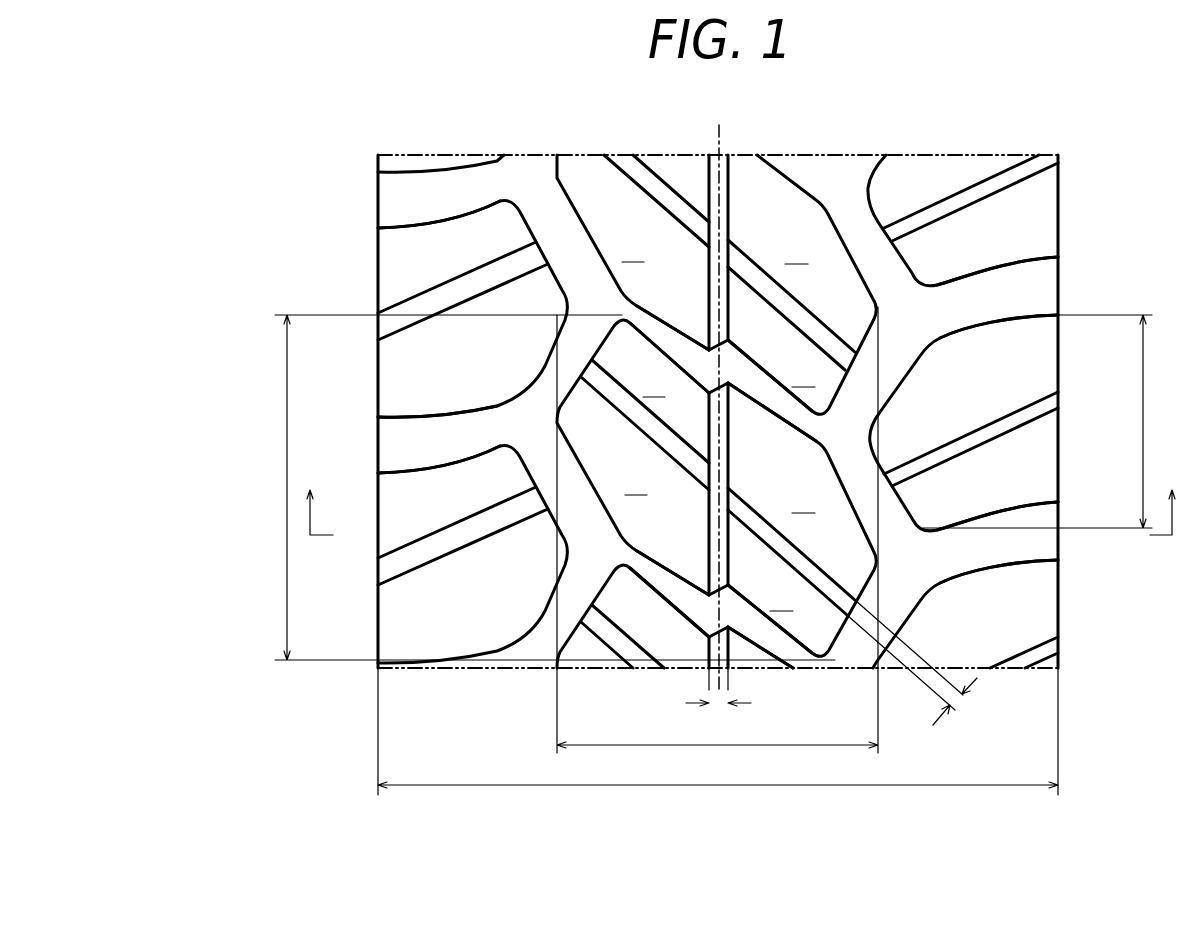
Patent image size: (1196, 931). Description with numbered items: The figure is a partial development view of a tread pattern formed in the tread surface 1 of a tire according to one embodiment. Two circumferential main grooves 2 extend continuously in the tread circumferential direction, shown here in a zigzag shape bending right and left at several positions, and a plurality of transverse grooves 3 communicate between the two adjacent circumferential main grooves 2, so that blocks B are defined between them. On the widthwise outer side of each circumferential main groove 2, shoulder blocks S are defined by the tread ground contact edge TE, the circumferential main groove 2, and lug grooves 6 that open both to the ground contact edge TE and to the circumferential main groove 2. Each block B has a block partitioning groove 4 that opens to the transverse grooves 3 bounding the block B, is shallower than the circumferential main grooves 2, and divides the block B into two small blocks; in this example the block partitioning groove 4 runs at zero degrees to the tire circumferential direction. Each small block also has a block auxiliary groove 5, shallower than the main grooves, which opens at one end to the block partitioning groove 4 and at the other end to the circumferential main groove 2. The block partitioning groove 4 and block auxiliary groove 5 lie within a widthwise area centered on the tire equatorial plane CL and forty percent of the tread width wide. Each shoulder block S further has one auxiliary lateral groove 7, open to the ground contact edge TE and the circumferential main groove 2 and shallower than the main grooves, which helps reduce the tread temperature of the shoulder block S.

The tread surface 1 is at (836, 120).
The circumferential main groove 2 is at (530, 653).
The transverse groove 3 is at (742, 377).
The block partitioning groove 4 is at (721, 205).
The block auxiliary groove 5 is at (687, 216).
The lug groove 6 is at (400, 197).
The auxiliary lateral groove 7 is at (382, 322).
The block B is at (890, 310).
The shoulder block S is at (446, 370).
The tread ground contact edge TE is at (378, 263).
The tire equatorial plane CL is at (719, 392).